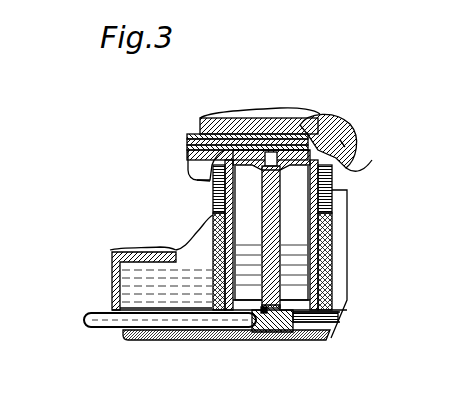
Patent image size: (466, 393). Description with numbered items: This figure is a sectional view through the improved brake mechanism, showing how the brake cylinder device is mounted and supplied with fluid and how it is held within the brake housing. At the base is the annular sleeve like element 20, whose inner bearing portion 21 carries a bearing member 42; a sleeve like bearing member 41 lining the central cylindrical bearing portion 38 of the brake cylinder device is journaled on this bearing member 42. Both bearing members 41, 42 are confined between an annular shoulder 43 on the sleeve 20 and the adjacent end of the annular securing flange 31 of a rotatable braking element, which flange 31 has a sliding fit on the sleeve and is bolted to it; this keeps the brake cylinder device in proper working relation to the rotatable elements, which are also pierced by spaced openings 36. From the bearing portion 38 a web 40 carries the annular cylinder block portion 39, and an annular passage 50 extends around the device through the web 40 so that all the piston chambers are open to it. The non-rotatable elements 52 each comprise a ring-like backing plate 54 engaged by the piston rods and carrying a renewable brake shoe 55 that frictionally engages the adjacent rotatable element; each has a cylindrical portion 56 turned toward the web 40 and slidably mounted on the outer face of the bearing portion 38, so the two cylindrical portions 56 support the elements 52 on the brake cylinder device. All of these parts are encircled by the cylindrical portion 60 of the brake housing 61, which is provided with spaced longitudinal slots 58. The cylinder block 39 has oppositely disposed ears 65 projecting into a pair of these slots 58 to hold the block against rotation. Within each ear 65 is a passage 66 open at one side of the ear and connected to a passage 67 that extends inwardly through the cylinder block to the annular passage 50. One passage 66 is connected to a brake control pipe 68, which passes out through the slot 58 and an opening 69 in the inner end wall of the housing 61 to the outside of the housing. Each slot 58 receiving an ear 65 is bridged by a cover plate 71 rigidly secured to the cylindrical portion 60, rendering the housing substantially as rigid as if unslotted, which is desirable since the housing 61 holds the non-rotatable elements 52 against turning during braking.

The annular sleeve like element 20 is at (210, 121).
The inner bearing portion 21 is at (226, 136).
The bearing member 42 is at (246, 141).
The sleeve like bearing member 41 is at (272, 147).
The annular shoulder 43 is at (298, 152).
The central cylindrical bearing portion 38 is at (332, 130).
The annular securing flange 31 is at (204, 134).
The spaced openings 36 is at (195, 158).
The cylindrical portion 56 is at (206, 172).
The backing plate 54 is at (212, 194).
The brake shoe 55 is at (214, 230).
The web 40 is at (330, 174).
The annular passage 50 is at (300, 160).
The passage 67 is at (282, 221).
The annular cylinder block portion 39 is at (298, 248).
The passage 66 is at (266, 328).
The ears 65 is at (290, 318).
The slots 58 is at (312, 322).
The cylindrical portion 60 is at (348, 298).
The non-rotatable elements 52 is at (343, 300).
The brake housing 61 is at (112, 268).
The opening 69 is at (114, 311).
The brake control pipe 68 is at (96, 325).
The cover plate 71 is at (138, 342).